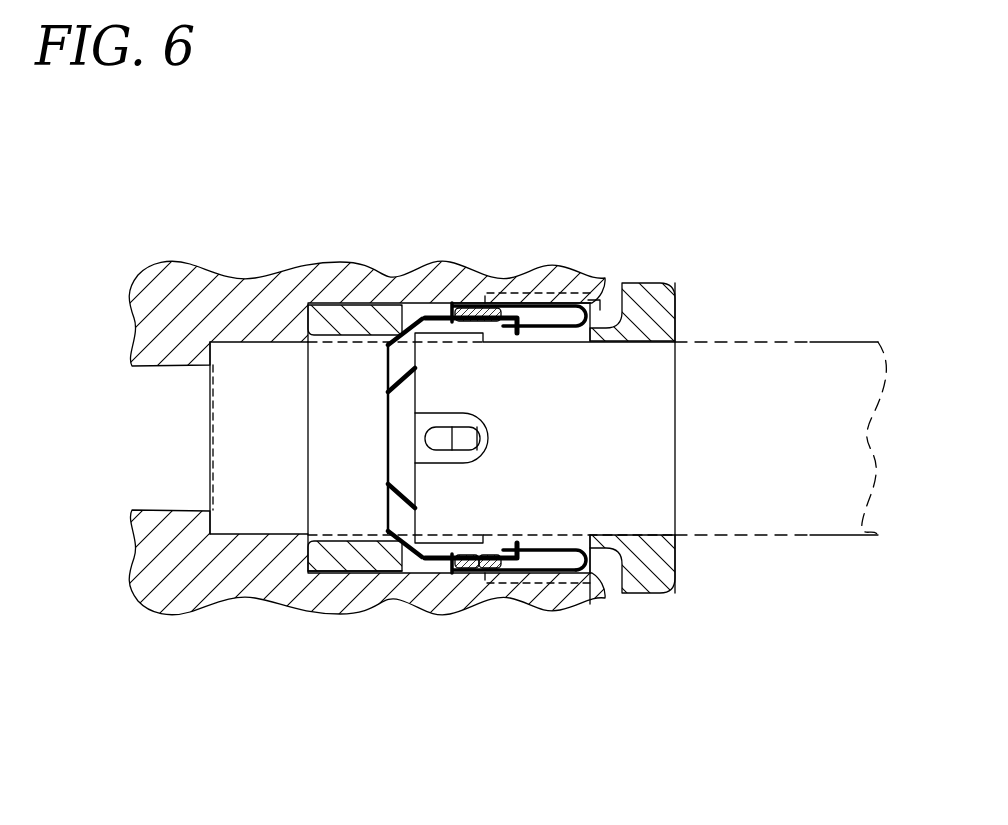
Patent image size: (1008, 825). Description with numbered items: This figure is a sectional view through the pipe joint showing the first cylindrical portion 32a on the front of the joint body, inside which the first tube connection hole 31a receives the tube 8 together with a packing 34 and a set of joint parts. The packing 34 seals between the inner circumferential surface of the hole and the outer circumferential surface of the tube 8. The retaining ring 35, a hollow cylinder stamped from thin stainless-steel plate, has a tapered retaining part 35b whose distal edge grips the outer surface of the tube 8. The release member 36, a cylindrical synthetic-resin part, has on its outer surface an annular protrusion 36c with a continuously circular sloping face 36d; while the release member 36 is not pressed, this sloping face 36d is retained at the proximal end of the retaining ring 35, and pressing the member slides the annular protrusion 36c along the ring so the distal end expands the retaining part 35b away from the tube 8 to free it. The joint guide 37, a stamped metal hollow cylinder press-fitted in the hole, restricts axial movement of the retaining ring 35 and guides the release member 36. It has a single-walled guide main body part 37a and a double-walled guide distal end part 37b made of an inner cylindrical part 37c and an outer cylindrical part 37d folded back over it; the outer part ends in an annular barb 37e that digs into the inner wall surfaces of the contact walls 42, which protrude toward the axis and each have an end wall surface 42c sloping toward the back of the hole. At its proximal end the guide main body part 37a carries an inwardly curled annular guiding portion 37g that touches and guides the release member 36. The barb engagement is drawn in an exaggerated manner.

The tube 8 is at (836, 362).
The first tube connection hole 31a is at (648, 468).
The first cylindrical portion 32a is at (390, 272).
The packing 34 is at (362, 340).
The retaining ring 35 is at (410, 577).
The retaining part 35b is at (362, 558).
The release member 36 is at (680, 312).
The annular protrusion 36c is at (513, 322).
The sloping face 36d is at (453, 302).
The joint guide 37 is at (553, 322).
The guide main body part 37a is at (556, 582).
The guide distal end part 37b is at (493, 654).
The inner cylindrical part 37c is at (455, 565).
The outer cylindrical part 37d is at (505, 565).
The annular barb 37e is at (502, 303).
The annular guiding portion 37g is at (598, 568).
The contact walls 42 is at (531, 293).
The end wall surface 42c is at (598, 303).